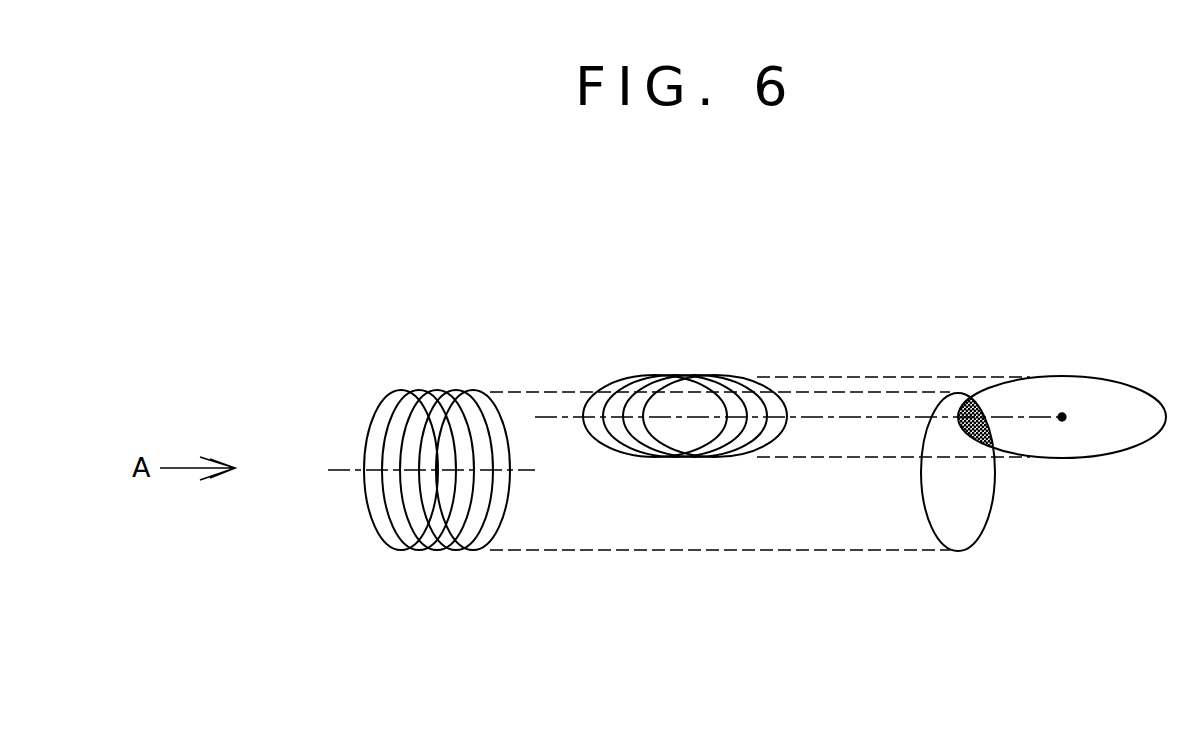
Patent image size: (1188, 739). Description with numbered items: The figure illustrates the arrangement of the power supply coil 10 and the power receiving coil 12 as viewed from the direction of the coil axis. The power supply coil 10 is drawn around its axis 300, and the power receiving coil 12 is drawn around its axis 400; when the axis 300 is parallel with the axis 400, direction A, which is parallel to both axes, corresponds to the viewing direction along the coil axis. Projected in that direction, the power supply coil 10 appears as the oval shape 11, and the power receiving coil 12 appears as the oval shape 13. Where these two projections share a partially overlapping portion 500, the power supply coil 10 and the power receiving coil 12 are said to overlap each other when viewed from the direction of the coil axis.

The power supply coil 10 is at (437, 550).
The oval shape 11 is at (967, 553).
The power receiving coil 12 is at (702, 375).
The oval shape 13 is at (1113, 378).
The axis 300 is at (345, 468).
The axis 400 is at (548, 416).
The partially overlapping portion 500 is at (990, 442).